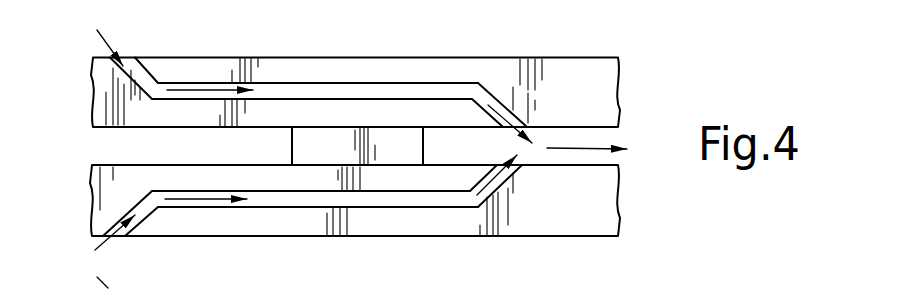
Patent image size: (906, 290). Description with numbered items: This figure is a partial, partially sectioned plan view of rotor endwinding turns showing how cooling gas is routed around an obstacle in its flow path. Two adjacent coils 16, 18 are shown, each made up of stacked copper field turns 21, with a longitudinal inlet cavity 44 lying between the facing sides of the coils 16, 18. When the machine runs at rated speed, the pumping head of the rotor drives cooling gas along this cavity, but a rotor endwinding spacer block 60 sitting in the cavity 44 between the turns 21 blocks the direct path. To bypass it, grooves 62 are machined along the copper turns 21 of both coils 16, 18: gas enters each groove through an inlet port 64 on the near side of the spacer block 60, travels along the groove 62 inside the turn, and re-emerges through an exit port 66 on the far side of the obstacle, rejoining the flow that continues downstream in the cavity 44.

The coil 16 is at (340, 57).
The coil 18 is at (303, 238).
The field turns 21 is at (580, 72).
The inlet cavity 44 is at (142, 144).
The rotor endwinding spacer block 60 is at (310, 147).
The grooves 62 is at (437, 95).
The inlet ports 64 is at (147, 80).
The exit ports 66 is at (520, 112).